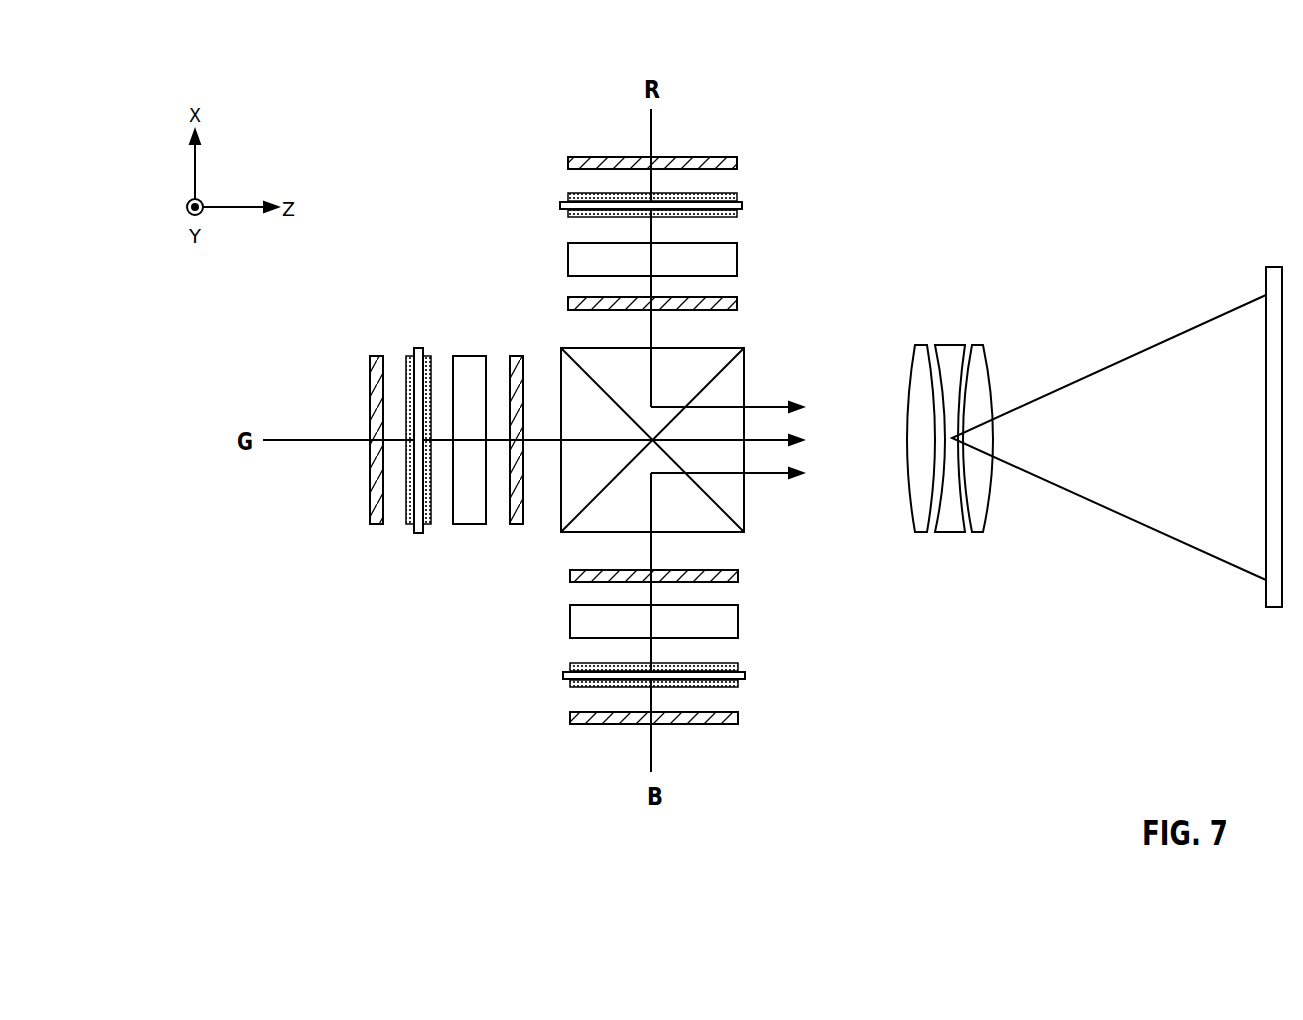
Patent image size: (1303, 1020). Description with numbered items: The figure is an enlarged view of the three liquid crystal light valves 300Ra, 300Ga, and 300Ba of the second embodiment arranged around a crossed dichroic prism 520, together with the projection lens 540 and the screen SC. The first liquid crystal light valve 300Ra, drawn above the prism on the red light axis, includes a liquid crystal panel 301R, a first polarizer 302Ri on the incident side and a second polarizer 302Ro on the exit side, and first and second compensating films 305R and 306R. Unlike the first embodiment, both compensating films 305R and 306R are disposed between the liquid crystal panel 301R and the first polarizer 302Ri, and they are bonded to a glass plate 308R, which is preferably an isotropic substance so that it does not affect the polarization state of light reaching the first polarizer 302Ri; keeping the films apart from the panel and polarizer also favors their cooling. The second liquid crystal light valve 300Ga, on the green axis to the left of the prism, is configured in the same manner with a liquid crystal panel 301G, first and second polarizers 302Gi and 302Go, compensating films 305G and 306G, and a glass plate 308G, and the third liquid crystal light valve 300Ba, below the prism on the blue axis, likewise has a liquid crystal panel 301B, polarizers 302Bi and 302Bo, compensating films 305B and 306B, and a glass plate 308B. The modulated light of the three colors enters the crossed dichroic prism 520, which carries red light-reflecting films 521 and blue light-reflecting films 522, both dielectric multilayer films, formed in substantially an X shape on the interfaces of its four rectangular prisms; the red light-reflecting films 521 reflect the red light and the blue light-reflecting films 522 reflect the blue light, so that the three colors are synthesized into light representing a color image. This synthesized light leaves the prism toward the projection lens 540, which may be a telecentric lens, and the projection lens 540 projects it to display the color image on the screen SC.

The first liquid crystal light valve 300Ra is at (827, 128).
The second liquid crystal light valve 300Ga is at (296, 600).
The third liquid crystal light valve 300Ba is at (830, 555).
The liquid crystal panel 301R is at (737, 258).
The liquid crystal panel 301G is at (469, 524).
The liquid crystal panel 301B is at (738, 612).
The first polarizer 302Ri is at (737, 163).
The second polarizer 302Ro is at (737, 303).
The first polarizer 302Gi is at (377, 524).
The second polarizer 302Go is at (516, 524).
The first polarizer 302Bi is at (738, 722).
The second polarizer 302Bo is at (738, 575).
The first compensating film 305R is at (737, 197).
The first compensating film 305G is at (410, 524).
The first compensating film 305B is at (738, 685).
The second compensating film 306R is at (737, 213).
The second compensating film 306G is at (427, 524).
The second compensating film 306B is at (738, 666).
The glass plate 308R is at (742, 206).
The glass plate 308G is at (418, 533).
The glass plate 308B is at (745, 676).
The crossed dichroic prism 520 is at (697, 432).
The red light-reflecting film 521 is at (712, 497).
The blue light-reflecting film 522 is at (712, 382).
The projection lens 540 is at (949, 345).
The screen SC is at (1273, 267).